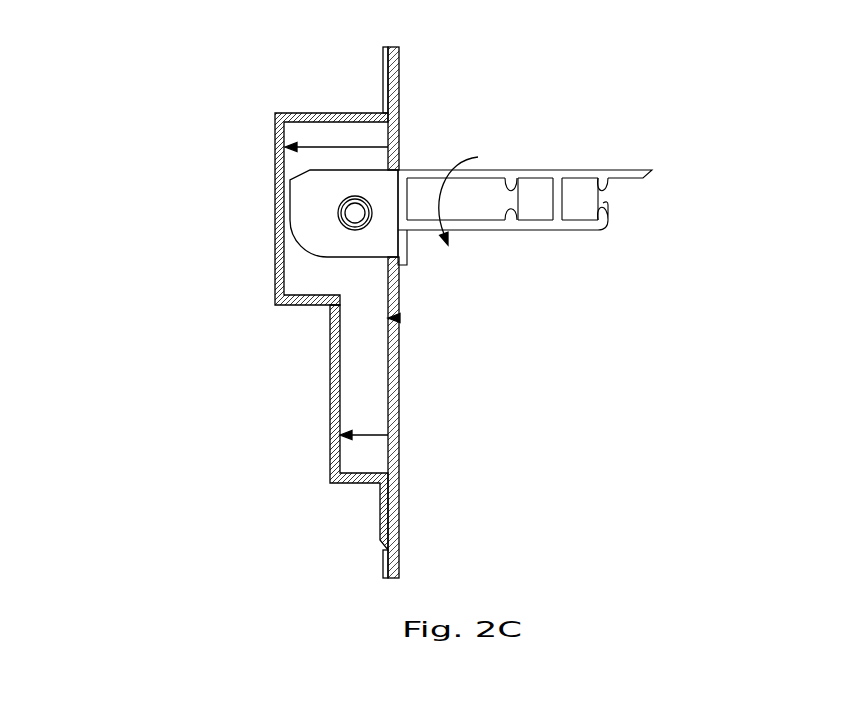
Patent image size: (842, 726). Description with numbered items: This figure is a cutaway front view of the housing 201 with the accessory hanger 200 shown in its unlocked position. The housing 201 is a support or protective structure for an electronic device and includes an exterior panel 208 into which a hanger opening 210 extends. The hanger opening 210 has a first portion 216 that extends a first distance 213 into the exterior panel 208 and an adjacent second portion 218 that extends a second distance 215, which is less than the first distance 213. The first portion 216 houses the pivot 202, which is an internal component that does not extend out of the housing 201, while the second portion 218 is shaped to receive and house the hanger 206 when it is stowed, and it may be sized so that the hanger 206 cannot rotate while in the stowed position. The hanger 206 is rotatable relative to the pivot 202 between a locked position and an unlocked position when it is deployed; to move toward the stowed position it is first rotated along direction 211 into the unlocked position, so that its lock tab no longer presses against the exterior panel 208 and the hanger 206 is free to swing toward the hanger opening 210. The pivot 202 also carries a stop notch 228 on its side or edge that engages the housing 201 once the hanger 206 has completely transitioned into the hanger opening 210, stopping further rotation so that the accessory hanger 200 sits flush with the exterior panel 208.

The accessory hanger 200 is at (574, 371).
The housing 201 is at (129, 108).
The pivot 202 is at (345, 245).
The hanger 206 is at (588, 228).
The exterior panel 208 is at (406, 81).
The hanger opening 210 is at (400, 318).
The direction 211 is at (438, 197).
The first distance 213 is at (340, 147).
The second distance 215 is at (377, 435).
The first portion 216 is at (295, 262).
The second portion 218 is at (350, 375).
The stop notch 228 is at (300, 177).